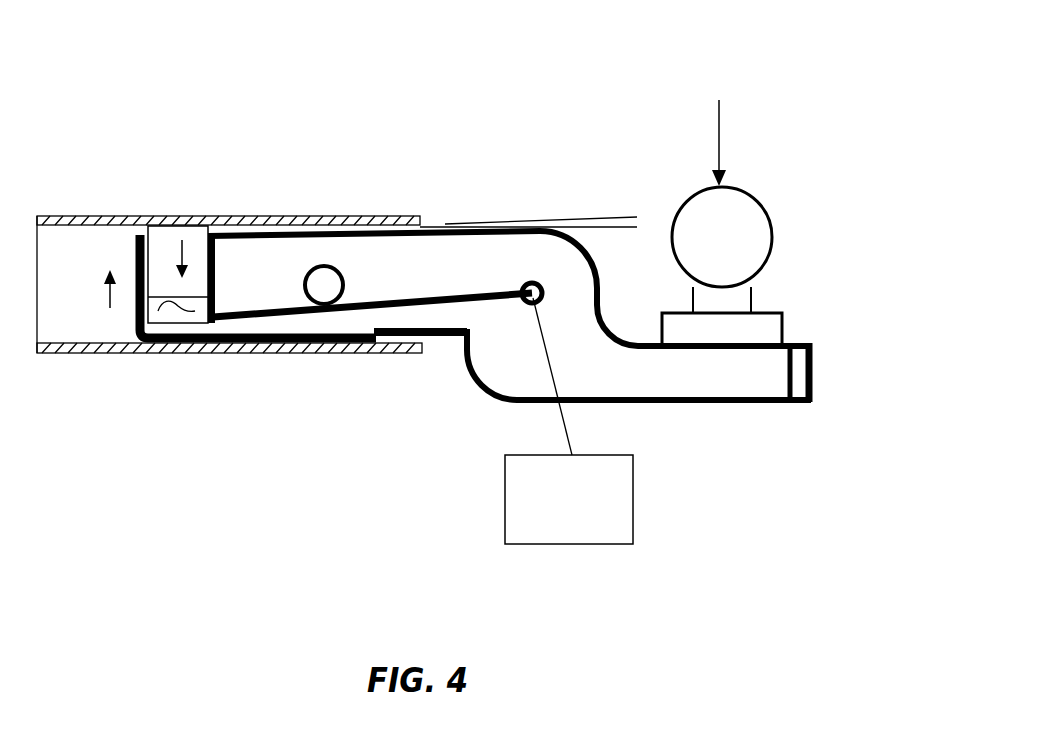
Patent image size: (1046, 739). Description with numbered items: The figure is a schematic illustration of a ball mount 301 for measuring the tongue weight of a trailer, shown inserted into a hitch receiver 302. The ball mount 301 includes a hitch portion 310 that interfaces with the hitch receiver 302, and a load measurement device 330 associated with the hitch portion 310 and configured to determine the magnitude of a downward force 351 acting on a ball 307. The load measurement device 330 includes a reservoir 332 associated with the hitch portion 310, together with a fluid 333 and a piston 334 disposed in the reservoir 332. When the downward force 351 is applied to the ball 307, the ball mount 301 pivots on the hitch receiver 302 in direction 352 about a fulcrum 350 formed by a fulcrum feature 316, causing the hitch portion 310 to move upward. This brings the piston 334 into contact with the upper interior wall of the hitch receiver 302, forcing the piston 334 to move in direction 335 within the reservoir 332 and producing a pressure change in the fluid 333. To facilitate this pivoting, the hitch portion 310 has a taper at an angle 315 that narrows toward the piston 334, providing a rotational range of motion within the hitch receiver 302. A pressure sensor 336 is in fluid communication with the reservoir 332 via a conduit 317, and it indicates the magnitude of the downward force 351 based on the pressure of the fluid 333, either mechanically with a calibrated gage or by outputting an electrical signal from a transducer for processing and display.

The ball mount 301 is at (592, 62).
The hitch receiver 302 is at (103, 215).
The ball 307 is at (774, 238).
The hitch portion 310 is at (260, 322).
The angle 315 is at (598, 268).
The fulcrum feature 316 is at (394, 345).
The conduit 317 is at (300, 318).
The load measurement device 330 is at (184, 200).
The reservoir 332 is at (160, 328).
The fluid 333 is at (184, 316).
The piston 334 is at (198, 235).
The direction 335 is at (181, 248).
The pressure sensor 336 is at (633, 507).
The fulcrum 350 is at (382, 353).
The downward force 351 is at (722, 142).
The direction 352 is at (110, 302).